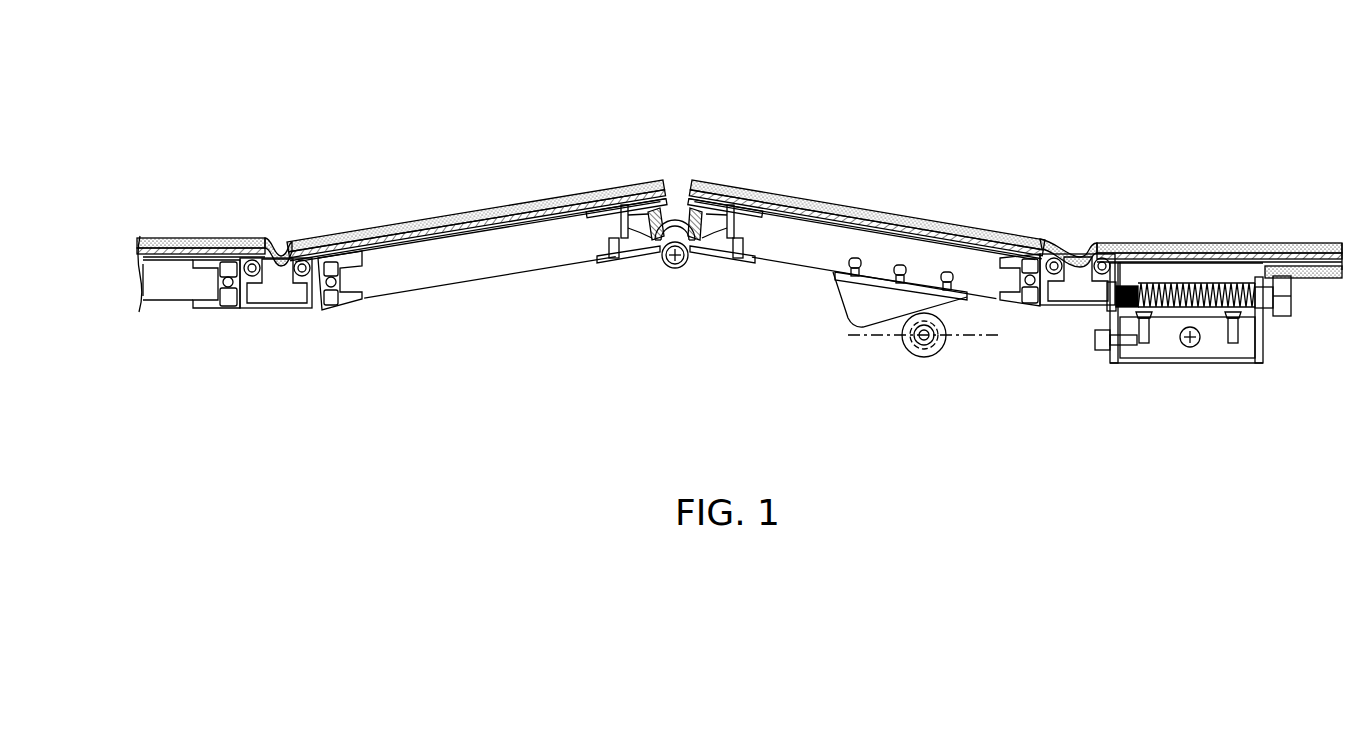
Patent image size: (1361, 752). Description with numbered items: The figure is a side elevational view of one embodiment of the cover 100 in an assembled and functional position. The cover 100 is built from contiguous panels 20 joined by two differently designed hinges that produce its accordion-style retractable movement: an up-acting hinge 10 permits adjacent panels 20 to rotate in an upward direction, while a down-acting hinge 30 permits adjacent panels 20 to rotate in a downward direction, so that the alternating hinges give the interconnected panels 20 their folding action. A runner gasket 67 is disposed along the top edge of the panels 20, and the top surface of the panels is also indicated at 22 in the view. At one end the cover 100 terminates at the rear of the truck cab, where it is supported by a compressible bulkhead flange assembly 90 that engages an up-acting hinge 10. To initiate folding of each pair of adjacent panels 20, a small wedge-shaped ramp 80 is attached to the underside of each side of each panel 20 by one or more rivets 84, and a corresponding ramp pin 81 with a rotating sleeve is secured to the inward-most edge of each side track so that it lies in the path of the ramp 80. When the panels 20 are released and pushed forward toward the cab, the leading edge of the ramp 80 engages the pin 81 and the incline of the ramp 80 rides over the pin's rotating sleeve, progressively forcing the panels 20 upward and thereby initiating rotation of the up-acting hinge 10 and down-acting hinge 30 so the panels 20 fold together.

The cover 100 is at (988, 95).
The panels 20 is at (160, 266).
The runner gasket 67 is at (350, 232).
The panel top surface 22 is at (752, 200).
The up-acting hinge 10 is at (278, 322).
The down-acting hinge 30 is at (673, 292).
The rivets 84 is at (852, 278).
The ramp 80 is at (856, 325).
The ramp pin 81 is at (920, 358).
The compressible bulkhead flange assembly 90 is at (1228, 372).